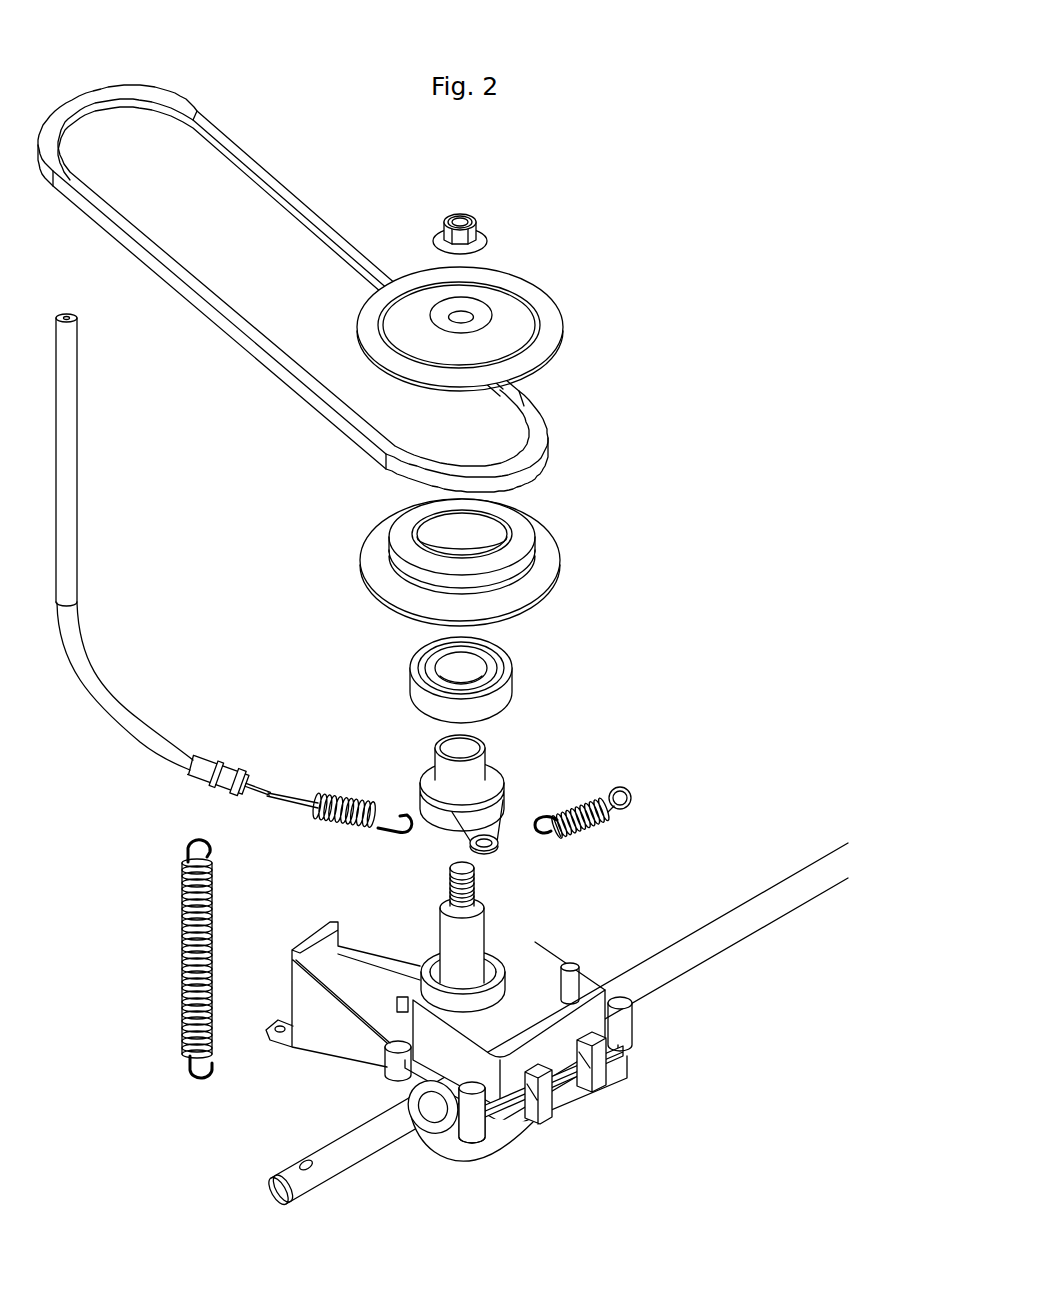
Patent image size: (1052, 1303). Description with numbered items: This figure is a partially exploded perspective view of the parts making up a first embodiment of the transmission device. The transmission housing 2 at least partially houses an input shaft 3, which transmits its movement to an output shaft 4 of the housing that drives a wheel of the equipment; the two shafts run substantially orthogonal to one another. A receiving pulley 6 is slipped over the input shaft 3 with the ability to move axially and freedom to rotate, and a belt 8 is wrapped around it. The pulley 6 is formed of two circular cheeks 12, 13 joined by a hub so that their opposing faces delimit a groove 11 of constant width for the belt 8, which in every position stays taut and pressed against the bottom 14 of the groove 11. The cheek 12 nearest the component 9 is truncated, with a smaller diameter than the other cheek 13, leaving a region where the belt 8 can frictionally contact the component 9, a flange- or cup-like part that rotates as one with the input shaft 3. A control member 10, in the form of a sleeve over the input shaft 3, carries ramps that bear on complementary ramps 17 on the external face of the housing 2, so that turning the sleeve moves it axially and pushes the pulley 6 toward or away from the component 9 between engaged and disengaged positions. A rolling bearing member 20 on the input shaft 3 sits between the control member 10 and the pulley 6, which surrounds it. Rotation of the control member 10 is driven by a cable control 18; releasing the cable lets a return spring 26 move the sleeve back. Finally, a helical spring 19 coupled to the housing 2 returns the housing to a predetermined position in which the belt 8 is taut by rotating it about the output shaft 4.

The transmission housing 2 is at (542, 968).
The input shaft 3 is at (473, 893).
The output shaft 4 is at (702, 936).
The receiving pulley 6 is at (459, 576).
The belt 8 is at (545, 417).
The component 9 is at (548, 310).
The control member 10 is at (498, 780).
The groove 11 is at (527, 573).
The truncated cheek 12 is at (518, 537).
The cheek 13 is at (527, 603).
The bottom of the groove 14 is at (515, 585).
The complementary ramps 17 is at (527, 937).
The cable control 18 is at (98, 683).
The spring 19 is at (183, 992).
The rolling bearing member 20 is at (508, 698).
The return spring 26 is at (602, 827).